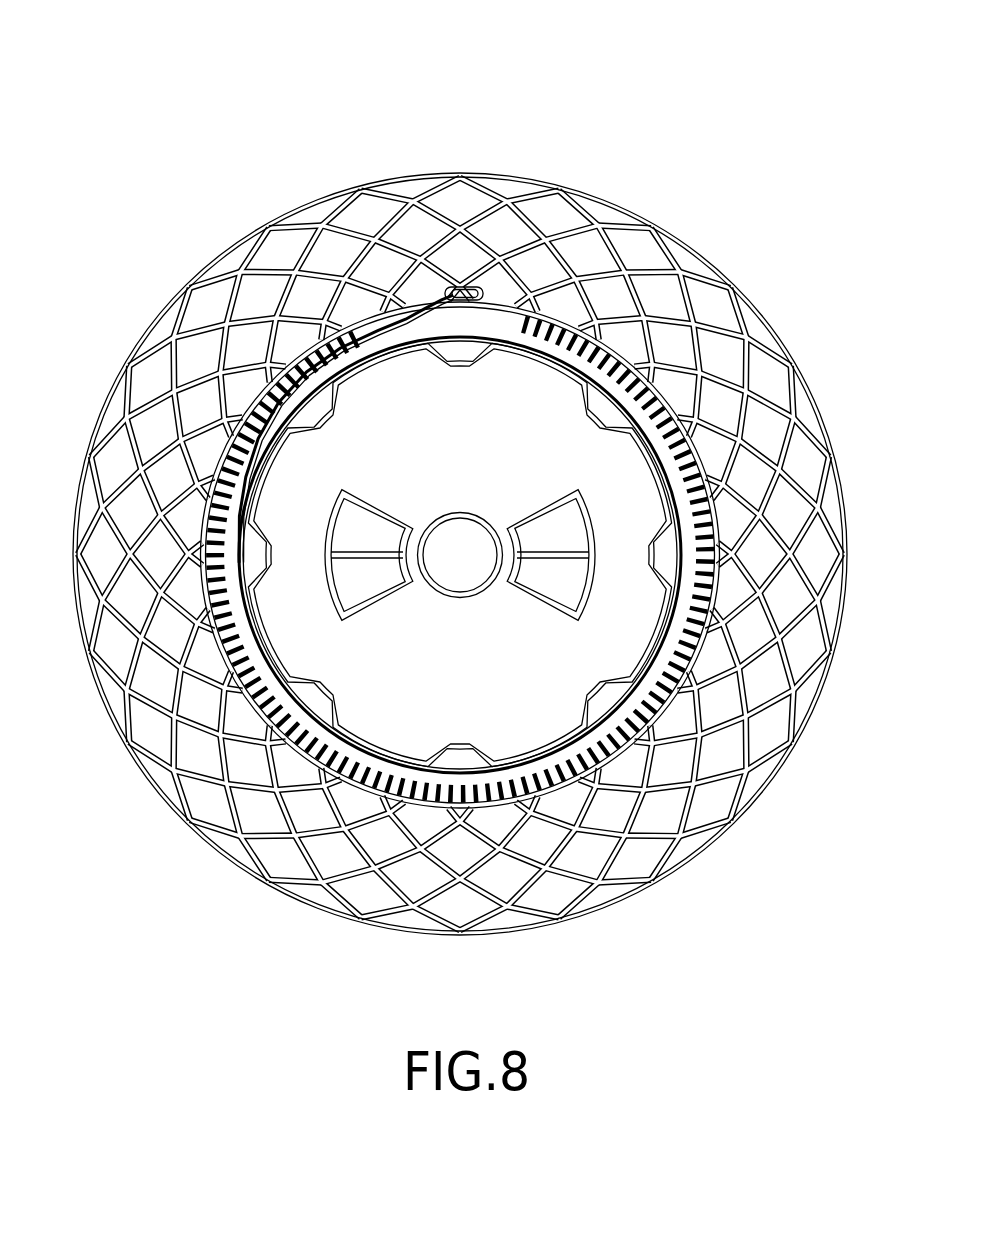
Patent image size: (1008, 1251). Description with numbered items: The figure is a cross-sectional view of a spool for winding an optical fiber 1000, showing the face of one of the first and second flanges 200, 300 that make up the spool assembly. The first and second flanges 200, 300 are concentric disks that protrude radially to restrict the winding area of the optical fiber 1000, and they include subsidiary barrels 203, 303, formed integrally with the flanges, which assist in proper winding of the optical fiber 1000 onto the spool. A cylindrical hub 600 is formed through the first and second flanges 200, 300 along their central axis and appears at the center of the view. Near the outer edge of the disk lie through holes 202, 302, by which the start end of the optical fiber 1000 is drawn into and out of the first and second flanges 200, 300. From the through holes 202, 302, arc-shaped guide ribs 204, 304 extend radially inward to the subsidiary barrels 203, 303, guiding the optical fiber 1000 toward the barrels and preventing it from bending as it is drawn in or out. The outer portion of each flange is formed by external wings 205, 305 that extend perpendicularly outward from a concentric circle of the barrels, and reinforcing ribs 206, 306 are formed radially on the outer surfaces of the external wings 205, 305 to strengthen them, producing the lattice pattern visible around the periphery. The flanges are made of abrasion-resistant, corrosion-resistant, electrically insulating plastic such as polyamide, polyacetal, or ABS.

The first flange 200 is at (460, 529).
The second flange 300 is at (641, 210).
The through hole 202 is at (466, 155).
The through hole 302 is at (457, 285).
The subsidiary barrel 203 is at (563, 539).
The subsidiary barrel 303 is at (640, 473).
The guide rib 204 is at (460, 431).
The guide rib 304 is at (490, 303).
The external wing 205 is at (460, 554).
The external wing 305 is at (713, 270).
The reinforcing rib 206 is at (460, 472).
The reinforcing rib 306 is at (282, 287).
The optical fiber 1000 is at (277, 367).
The cylindrical hub 600 is at (457, 565).